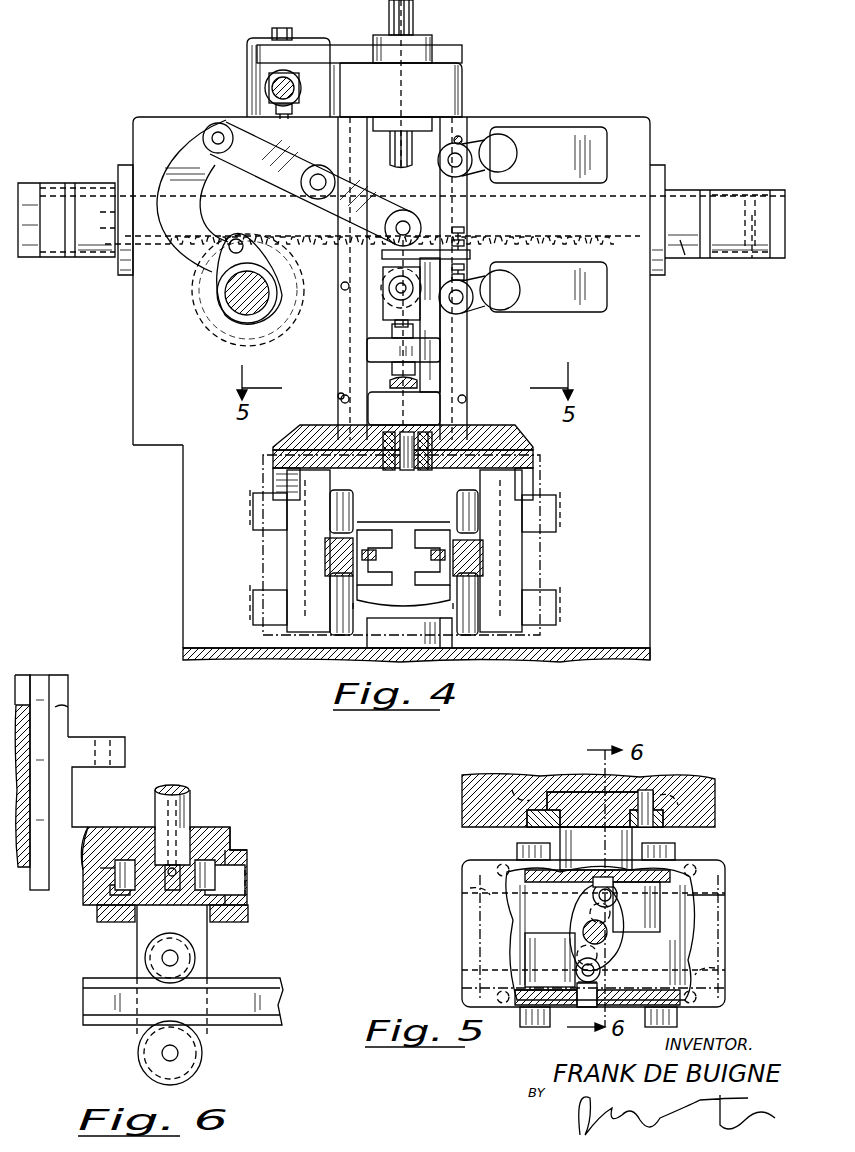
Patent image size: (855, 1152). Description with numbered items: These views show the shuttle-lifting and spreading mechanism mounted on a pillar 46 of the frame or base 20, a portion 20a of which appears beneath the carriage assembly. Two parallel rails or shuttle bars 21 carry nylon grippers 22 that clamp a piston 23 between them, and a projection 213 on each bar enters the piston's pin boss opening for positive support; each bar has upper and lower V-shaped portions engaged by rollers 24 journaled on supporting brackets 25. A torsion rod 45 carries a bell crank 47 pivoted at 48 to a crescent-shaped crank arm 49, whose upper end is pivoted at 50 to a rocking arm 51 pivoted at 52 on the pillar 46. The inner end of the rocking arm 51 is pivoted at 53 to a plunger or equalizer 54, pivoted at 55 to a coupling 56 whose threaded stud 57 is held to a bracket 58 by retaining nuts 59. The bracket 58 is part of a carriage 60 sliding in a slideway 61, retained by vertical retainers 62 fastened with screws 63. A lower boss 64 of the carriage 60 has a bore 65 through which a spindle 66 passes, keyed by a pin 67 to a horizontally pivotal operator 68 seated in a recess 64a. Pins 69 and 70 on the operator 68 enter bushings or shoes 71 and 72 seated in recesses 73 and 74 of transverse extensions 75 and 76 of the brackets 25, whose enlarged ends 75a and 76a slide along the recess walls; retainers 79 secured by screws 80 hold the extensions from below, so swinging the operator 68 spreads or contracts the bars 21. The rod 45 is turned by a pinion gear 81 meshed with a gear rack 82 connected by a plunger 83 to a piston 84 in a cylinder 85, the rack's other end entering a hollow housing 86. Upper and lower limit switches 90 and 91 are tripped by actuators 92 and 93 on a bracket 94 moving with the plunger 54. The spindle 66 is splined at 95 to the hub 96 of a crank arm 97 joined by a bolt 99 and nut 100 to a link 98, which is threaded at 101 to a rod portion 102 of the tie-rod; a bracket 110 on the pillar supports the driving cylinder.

In FIG. 4, the frame or base 20 is at (614, 651).
In FIG. 4, the base portion 20a is at (400, 640).
In FIG. 4, the rails or shuttle bars 21 is at (330, 556).
In FIG. 6, the rails or shuttle bars 21 is at (100, 996).
In FIG. 5, the rails or shuttle bars 21 is at (535, 850).
In FIG. 4, the grippers 22 is at (440, 562).
In FIG. 4, the projection 213 is at (432, 552).
In FIG. 4, the piston 23 is at (452, 646).
In FIG. 4, the rollers 24 is at (352, 520).
In FIG. 6, the rollers 24 is at (196, 958).
In FIG. 4, the supporting brackets 25 is at (278, 540).
In FIG. 6, the supporting brackets 25 is at (140, 968).
In FIG. 4, the torsion rod 45 is at (232, 300).
In FIG. 4, the pillar 46 is at (140, 378).
In FIG. 6, the pillar 46 is at (22, 680).
In FIG. 5, the pillar 46 is at (480, 790).
In FIG. 4, the bell crank 47 is at (215, 288).
In FIG. 4, the pivotal connection 48 is at (242, 243).
In FIG. 4, the crescent-shaped crank arm 49 is at (168, 160).
In FIG. 4, the pivotal connection 50 is at (214, 133).
In FIG. 4, the rocking arm 51 is at (270, 152).
In FIG. 4, the pivot 52 is at (318, 172).
In FIG. 4, the pivot 53 is at (404, 220).
In FIG. 4, the plunger or equalizer 54 is at (382, 272).
In FIG. 4, the pivotal connection 55 is at (396, 290).
In FIG. 4, the coupling 56 is at (384, 313).
In FIG. 4, the screw-threaded stud 57 is at (390, 326).
In FIG. 4, the bracket 58 is at (370, 348).
In FIG. 6, the bracket 58 is at (113, 740).
In FIG. 4, the retaining nuts 59 is at (390, 368).
In FIG. 4, the carriage 60 is at (435, 322).
In FIG. 6, the carriage 60 is at (68, 722).
In FIG. 5, the carriage 60 is at (582, 800).
In FIG. 4, the slideway 61 is at (462, 130).
In FIG. 6, the slideway 61 is at (40, 680).
In FIG. 5, the slideway 61 is at (650, 790).
In FIG. 4, the retainers 62 is at (355, 410).
In FIG. 6, the retainers 62 is at (62, 680).
In FIG. 5, the retainers 62 is at (530, 818).
In FIG. 4, the screws 63 is at (462, 140).
In FIG. 5, the screws 63 is at (520, 790).
In FIG. 4, the boss 64 is at (500, 426).
In FIG. 6, the boss 64 is at (215, 827).
In FIG. 5, the boss 64 is at (705, 942).
In FIG. 6, the recess 64a is at (142, 858).
In FIG. 6, the vertical bore 65 is at (183, 826).
In FIG. 4, the spindle 66 is at (415, 383).
In FIG. 6, the spindle 66 is at (174, 792).
In FIG. 5, the spindle 66 is at (583, 932).
In FIG. 4, the pin 67 is at (386, 462).
In FIG. 6, the pin 67 is at (168, 865).
In FIG. 5, the pin 67 is at (578, 912).
In FIG. 4, the operator 68 is at (432, 445).
In FIG. 5, the operator 68 is at (613, 964).
In FIG. 6, the pin 69 is at (205, 865).
In FIG. 5, the pin 69 is at (606, 890).
In FIG. 4, the pin 70 is at (402, 464).
In FIG. 6, the pin 70 is at (226, 868).
In FIG. 5, the pin 70 is at (600, 972).
In FIG. 6, the bushing or shoe 71 is at (120, 890).
In FIG. 5, the bushing or shoe 71 is at (593, 880).
In FIG. 4, the bushing or shoe 72 is at (418, 464).
In FIG. 6, the bushing or shoe 72 is at (238, 880).
In FIG. 5, the bushing or shoe 72 is at (582, 992).
In FIG. 6, the recess 73 is at (160, 905).
In FIG. 5, the recess 73 is at (622, 918).
In FIG. 6, the recess 74 is at (190, 905).
In FIG. 5, the recess 74 is at (575, 955).
In FIG. 6, the transverse extension 75 is at (132, 922).
In FIG. 5, the transverse extension 75 is at (650, 885).
In FIG. 5, the enlarged outer end 75a is at (520, 952).
In FIG. 6, the transverse extension 76 is at (220, 922).
In FIG. 5, the transverse extension 76 is at (542, 977).
In FIG. 5, the enlarged outer end 76a is at (692, 905).
In FIG. 4, the retainers 79 is at (274, 478).
In FIG. 6, the retainers 79 is at (243, 910).
In FIG. 5, the retainers 79 is at (470, 888).
In FIG. 6, the screws 80 is at (248, 890).
In FIG. 5, the screws 80 is at (500, 866).
In FIG. 4, the pinion gear 81 is at (200, 346).
In FIG. 4, the gear rack 82 is at (296, 262).
In FIG. 4, the plunger 83 is at (682, 255).
In FIG. 4, the piston 84 is at (755, 258).
In FIG. 4, the cylinder 85 is at (720, 190).
In FIG. 4, the hollow housing 86 is at (78, 183).
In FIG. 4, the upper limit switch 90 is at (546, 135).
In FIG. 4, the lower limit switch 91 is at (600, 295).
In FIG. 4, the limit switch actuator 92 is at (462, 235).
In FIG. 4, the limit switch actuator 93 is at (470, 290).
In FIG. 4, the bracket 94 is at (468, 256).
In FIG. 4, the splined portion 95 is at (414, 15).
In FIG. 4, the splined hub 96 is at (433, 48).
In FIG. 4, the crank arm 97 is at (343, 52).
In FIG. 4, the link 98 is at (265, 85).
In FIG. 4, the bolt 99 is at (284, 30).
In FIG. 4, the nut 100 is at (274, 110).
In FIG. 4, the reduced threaded portion 101 is at (300, 80).
In FIG. 4, the rod portion 102 is at (300, 96).
In FIG. 4, the bracket 110 is at (247, 60).